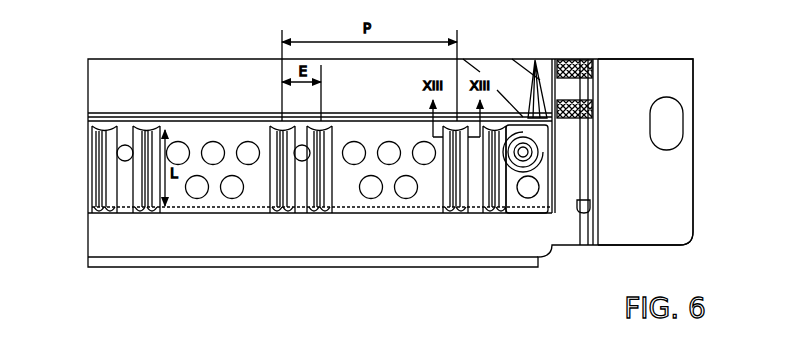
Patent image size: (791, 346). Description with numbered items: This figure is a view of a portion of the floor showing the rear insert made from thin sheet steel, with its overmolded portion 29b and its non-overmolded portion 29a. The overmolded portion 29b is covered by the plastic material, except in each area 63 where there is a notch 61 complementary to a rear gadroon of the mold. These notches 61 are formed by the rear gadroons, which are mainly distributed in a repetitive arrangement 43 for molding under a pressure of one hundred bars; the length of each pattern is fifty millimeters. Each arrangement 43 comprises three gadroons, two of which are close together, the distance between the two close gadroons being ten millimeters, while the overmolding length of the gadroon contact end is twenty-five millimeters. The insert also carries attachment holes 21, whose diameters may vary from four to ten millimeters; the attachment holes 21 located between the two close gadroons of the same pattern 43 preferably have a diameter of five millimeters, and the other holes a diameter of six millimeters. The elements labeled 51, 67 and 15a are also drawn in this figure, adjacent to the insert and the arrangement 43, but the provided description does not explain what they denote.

The attachment holes 21 is at (124, 145).
The non-overmolded portion 29a is at (130, 240).
The overmolded portion 29b is at (90, 128).
The repetitive arrangement 43 is at (443, 213).
The fastening portions 51 is at (571, 58).
The notch 61 is at (98, 197).
The area 63 is at (104, 166).
The groove lower end 67 is at (498, 213).
The bracket plate 15a is at (673, 72).